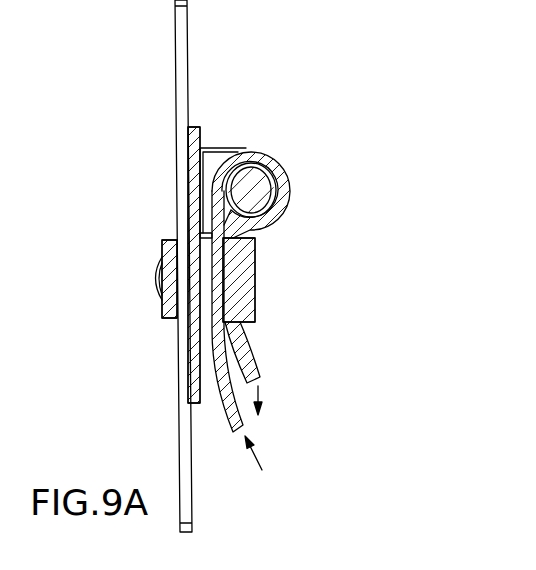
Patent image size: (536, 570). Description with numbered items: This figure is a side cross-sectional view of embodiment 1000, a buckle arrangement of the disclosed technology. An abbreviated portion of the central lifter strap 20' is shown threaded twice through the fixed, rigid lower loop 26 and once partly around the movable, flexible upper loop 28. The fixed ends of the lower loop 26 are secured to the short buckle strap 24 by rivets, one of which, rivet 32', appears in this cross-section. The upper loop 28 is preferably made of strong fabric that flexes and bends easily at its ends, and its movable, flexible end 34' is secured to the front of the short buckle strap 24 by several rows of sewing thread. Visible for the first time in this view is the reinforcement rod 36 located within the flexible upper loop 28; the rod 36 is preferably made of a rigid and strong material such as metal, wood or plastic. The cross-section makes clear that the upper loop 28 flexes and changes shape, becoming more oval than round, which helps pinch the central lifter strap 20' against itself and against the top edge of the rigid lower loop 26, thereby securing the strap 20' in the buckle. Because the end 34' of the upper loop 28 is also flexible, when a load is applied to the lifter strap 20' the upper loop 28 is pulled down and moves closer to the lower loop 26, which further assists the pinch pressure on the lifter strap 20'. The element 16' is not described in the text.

The embodiment 1000 is at (358, 99).
The panel 16' is at (221, 266).
The short buckle strap 24 is at (190, 185).
The flexible end of upper loop 34' is at (156, 166).
The rivet 32' is at (98, 279).
The lower loop 26 is at (245, 285).
The central lifter strap 20' is at (287, 294).
The upper loop 28 is at (266, 156).
The reinforcement rod 36 is at (262, 217).